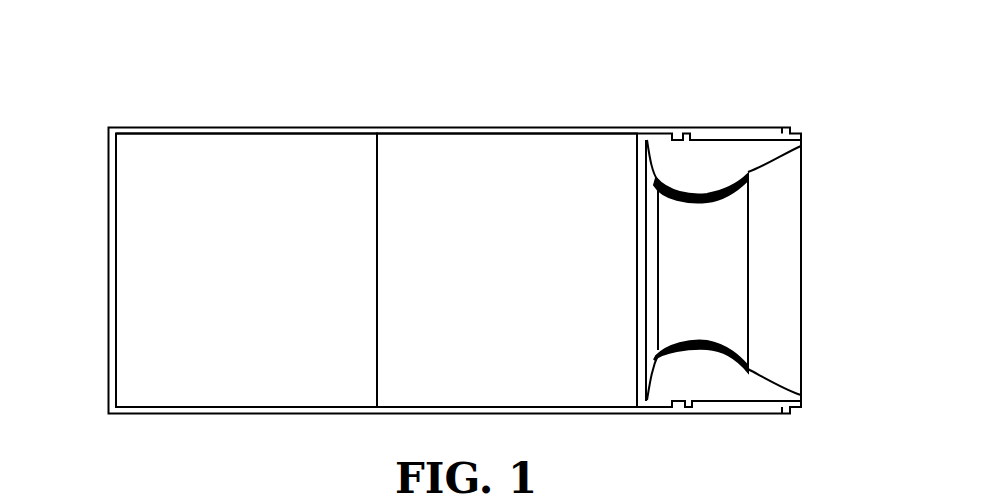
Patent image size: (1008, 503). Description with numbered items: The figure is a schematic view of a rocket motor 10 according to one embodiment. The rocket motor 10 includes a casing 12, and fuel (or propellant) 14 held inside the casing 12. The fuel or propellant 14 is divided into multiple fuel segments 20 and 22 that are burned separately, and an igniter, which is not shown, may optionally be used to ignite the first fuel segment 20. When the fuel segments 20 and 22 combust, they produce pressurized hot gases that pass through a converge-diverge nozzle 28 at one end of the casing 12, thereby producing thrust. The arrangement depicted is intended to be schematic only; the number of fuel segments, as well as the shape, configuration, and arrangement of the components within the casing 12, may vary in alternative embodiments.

The rocket motor 10 is at (134, 106).
The casing 12 is at (414, 127).
The fuel (or propellant) 14 is at (223, 62).
The first fuel segment 20 is at (502, 190).
The second fuel segment 22 is at (273, 190).
The converge-diverge nozzle 28 is at (747, 212).